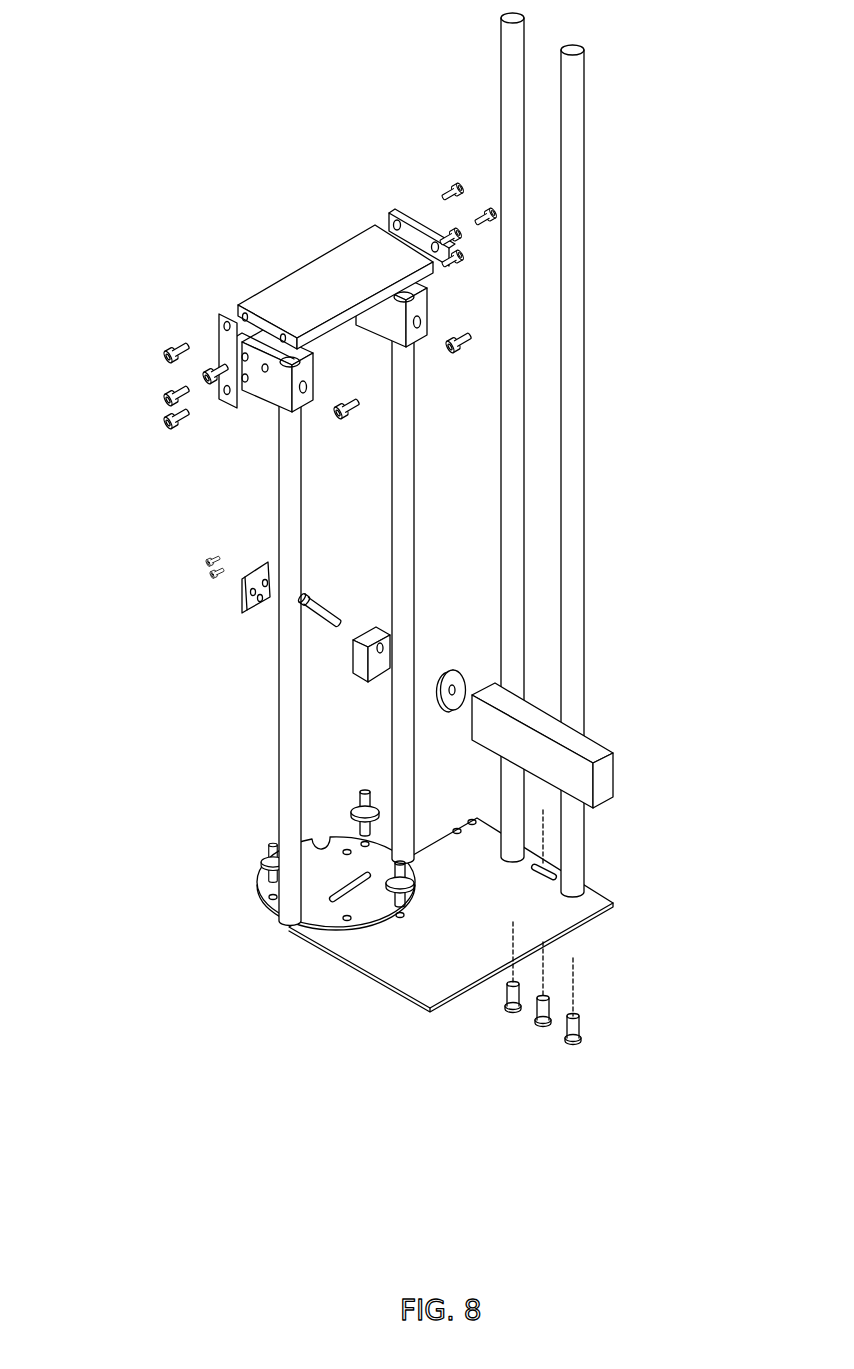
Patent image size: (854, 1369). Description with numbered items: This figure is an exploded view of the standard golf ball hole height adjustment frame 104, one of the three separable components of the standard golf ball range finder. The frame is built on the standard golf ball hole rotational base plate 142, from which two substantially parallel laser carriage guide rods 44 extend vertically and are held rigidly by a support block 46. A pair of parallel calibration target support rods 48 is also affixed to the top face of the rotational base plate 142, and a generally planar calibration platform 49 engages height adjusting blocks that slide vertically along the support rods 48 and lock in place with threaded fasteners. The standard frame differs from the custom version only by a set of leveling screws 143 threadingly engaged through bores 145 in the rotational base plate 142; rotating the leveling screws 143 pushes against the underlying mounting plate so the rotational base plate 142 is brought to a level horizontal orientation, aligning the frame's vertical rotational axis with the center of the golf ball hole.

The standard golf ball hole height adjustment frame 104 is at (137, 661).
The calibration platform 49 is at (317, 263).
The laser carriage guide rods 44 is at (583, 449).
The calibration target support rods 48 is at (284, 482).
The support block 46 is at (603, 777).
The standard golf ball hole rotational base plate 142 is at (614, 895).
The leveling screws 143 is at (289, 927).
The bores 145 is at (400, 918).